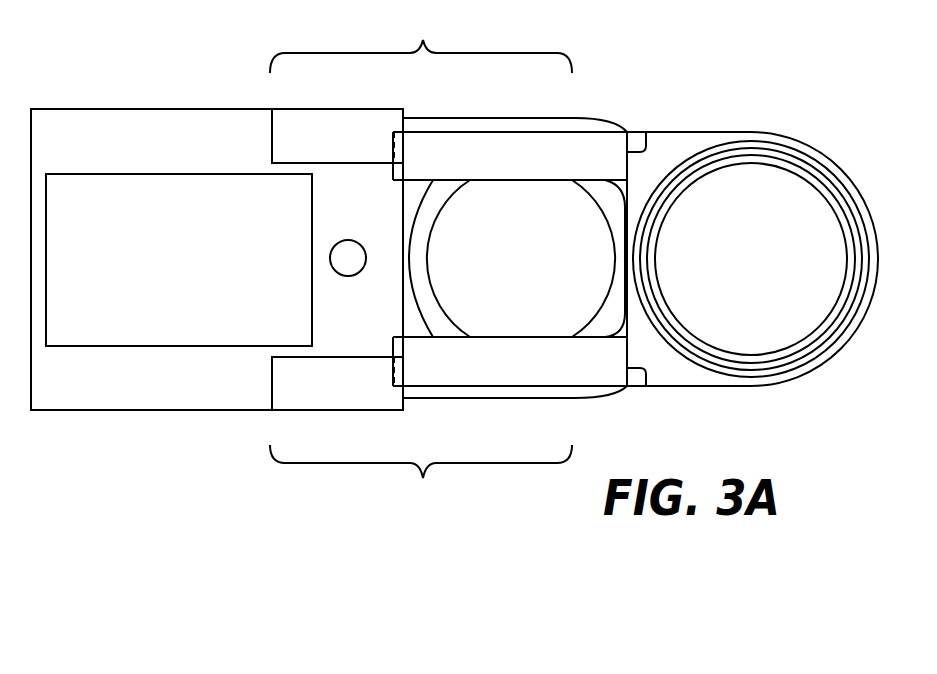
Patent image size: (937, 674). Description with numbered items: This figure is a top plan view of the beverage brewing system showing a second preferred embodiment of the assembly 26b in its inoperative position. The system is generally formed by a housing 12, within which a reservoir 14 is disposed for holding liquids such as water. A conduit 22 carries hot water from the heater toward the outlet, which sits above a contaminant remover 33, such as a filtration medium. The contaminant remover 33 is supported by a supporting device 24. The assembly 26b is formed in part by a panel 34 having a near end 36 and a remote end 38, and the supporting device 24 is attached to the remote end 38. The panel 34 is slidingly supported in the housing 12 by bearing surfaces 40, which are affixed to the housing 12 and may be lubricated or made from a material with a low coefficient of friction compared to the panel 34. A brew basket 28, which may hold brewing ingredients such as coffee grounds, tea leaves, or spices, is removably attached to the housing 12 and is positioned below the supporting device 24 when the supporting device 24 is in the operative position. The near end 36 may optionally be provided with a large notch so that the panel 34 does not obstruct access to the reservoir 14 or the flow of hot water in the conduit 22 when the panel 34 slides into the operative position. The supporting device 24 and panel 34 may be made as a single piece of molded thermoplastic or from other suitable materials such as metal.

The housing 12 is at (80, 108).
The reservoir 14 is at (163, 272).
The conduit 22 is at (345, 240).
The supporting device 24 is at (736, 132).
The assembly 26b is at (421, 260).
The brew basket 28 is at (506, 272).
The contaminant remover 33 is at (735, 274).
The panel 34 is at (532, 155).
The near end 36 is at (395, 347).
The remote end 38 is at (647, 148).
The bearing surfaces 40 is at (323, 147).